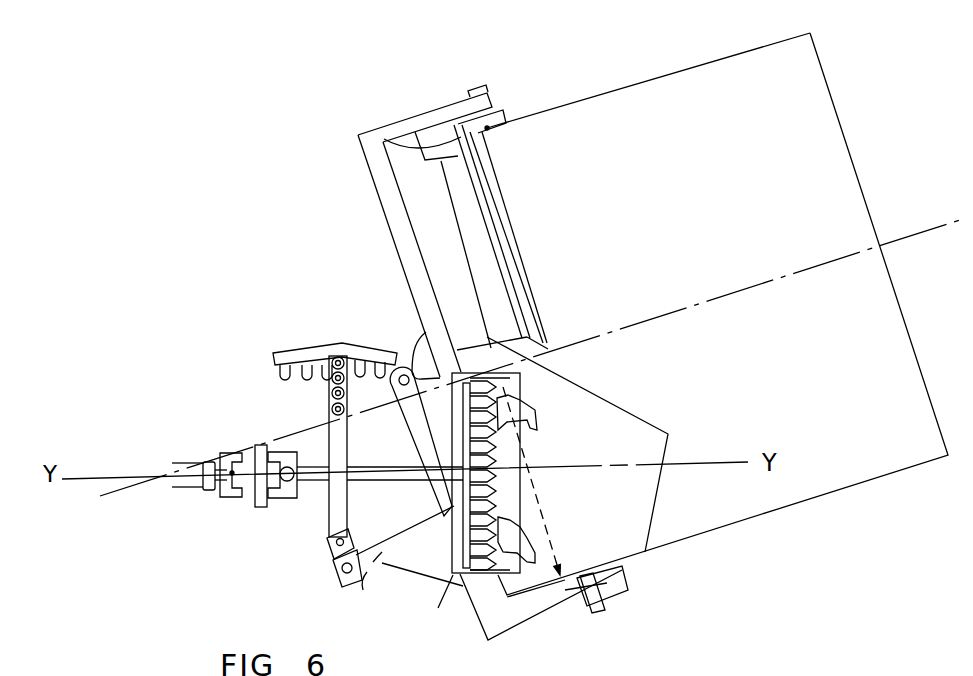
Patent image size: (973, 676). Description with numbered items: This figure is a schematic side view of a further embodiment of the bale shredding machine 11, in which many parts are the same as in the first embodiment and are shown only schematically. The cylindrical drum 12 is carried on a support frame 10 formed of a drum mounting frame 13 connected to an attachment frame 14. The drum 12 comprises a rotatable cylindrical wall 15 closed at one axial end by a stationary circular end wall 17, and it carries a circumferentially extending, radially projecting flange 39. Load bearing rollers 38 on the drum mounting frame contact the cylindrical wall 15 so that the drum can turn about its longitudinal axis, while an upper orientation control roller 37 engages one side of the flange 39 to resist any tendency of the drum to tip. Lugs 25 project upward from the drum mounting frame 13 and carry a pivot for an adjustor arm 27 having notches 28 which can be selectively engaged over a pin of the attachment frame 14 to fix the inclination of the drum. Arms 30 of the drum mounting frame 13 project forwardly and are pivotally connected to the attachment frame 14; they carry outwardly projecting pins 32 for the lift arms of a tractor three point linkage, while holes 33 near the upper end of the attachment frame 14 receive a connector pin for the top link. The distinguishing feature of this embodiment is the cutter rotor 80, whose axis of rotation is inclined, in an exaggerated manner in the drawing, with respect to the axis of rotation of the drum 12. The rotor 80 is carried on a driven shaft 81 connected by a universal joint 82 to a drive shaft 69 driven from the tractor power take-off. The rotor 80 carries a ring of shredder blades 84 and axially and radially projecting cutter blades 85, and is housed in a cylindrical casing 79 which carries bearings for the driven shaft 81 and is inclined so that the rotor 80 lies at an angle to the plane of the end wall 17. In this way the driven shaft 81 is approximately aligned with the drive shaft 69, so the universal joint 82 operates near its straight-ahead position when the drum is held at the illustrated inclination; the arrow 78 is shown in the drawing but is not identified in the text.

The support frame 10 is at (372, 192).
The bale shredding machine 11 is at (340, 133).
The cylindrical drum 12 is at (628, 92).
The drum mounting frame 13 is at (506, 500).
The attachment frame 14 is at (302, 424).
The cylindrical wall 15 is at (835, 103).
The stationary circular end wall 17 is at (458, 246).
The lugs 25 is at (420, 367).
The adjustor arm 27 is at (302, 350).
The notches 28 is at (358, 363).
The arms 30 is at (367, 578).
The pins 32 is at (337, 568).
The holes 33 is at (332, 393).
The upper roller 37 is at (510, 113).
The rollers 38 is at (598, 606).
The flange 39 is at (393, 136).
The drive shaft 69 is at (180, 462).
The direction arrow 78 is at (556, 566).
The cylindrical casing 79 is at (470, 607).
The cutter rotor 80 is at (450, 494).
The driven shaft 81 is at (428, 392).
The universal joint 82 is at (247, 493).
The shredder blades 84 is at (485, 492).
The cutter blades 85 is at (540, 428).